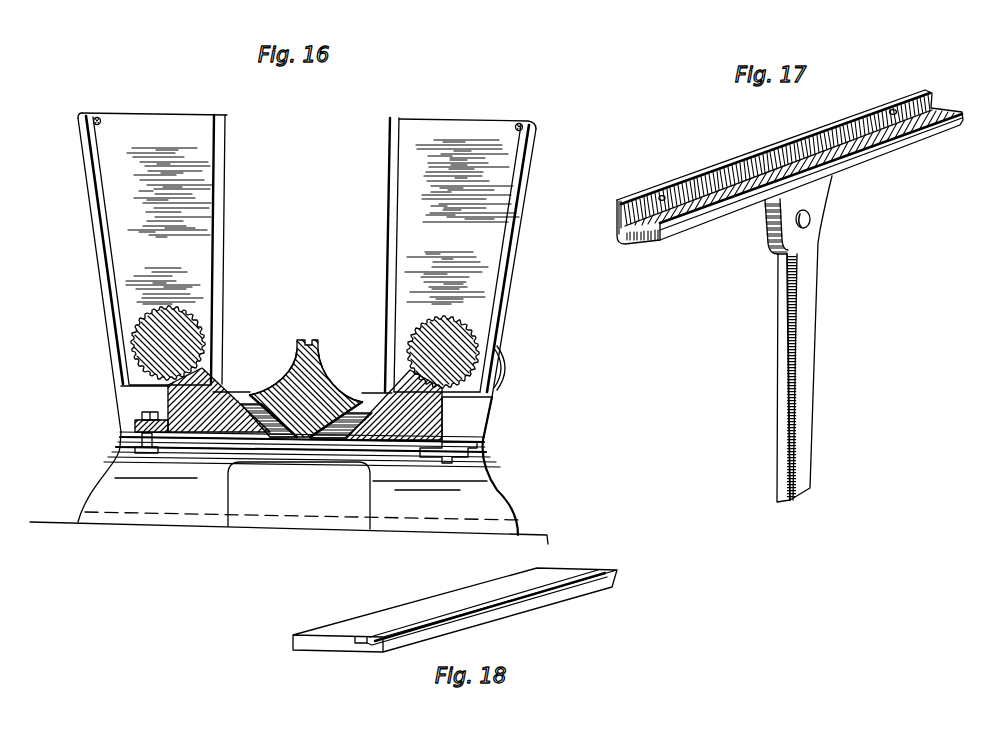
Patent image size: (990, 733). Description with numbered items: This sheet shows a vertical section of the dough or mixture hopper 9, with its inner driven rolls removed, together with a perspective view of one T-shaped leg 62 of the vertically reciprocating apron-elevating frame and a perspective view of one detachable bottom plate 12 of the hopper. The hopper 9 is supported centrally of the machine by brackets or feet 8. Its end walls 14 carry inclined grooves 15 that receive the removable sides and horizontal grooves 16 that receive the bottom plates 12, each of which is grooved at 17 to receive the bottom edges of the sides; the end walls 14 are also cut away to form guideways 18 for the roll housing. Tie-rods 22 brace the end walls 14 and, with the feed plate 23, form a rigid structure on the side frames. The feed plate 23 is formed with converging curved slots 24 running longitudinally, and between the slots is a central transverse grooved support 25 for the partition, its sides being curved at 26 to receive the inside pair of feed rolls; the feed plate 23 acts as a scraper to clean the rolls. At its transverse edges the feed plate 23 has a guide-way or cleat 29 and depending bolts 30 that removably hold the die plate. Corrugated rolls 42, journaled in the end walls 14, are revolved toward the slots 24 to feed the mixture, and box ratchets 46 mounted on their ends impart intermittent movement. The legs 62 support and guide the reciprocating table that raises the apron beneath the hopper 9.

In FIG. 16, the brackets or feet 8 is at (289, 470).
In FIG. 16, the dough or mixture hopper 9 is at (307, 124).
In FIG. 18, the bottom plates 12 is at (331, 648).
In FIG. 16, the end walls 14 is at (322, 222).
In FIG. 16, the inclined grooves 15 is at (104, 246).
In FIG. 16, the horizontal grooves 16 is at (121, 391).
In FIG. 18, the groove 17 is at (396, 628).
In FIG. 16, the guideways 18 is at (221, 274).
In FIG. 16, the tie-rods 22 is at (99, 118).
In FIG. 16, the feed plate 23 is at (214, 393).
In FIG. 16, the converging curved slots 24 is at (238, 410).
In FIG. 16, the central transverse grooved support 25 is at (308, 340).
In FIG. 16, the curved sides of support 26 is at (292, 360).
In FIG. 16, the guide-way or cleat 29 is at (440, 450).
In FIG. 16, the depending bolts 30 is at (120, 450).
In FIG. 16, the corrugated rolls 42 is at (150, 340).
In FIG. 16, the box ratchets 46 is at (508, 363).
In FIG. 17, the T-shaped legs 62 is at (815, 349).